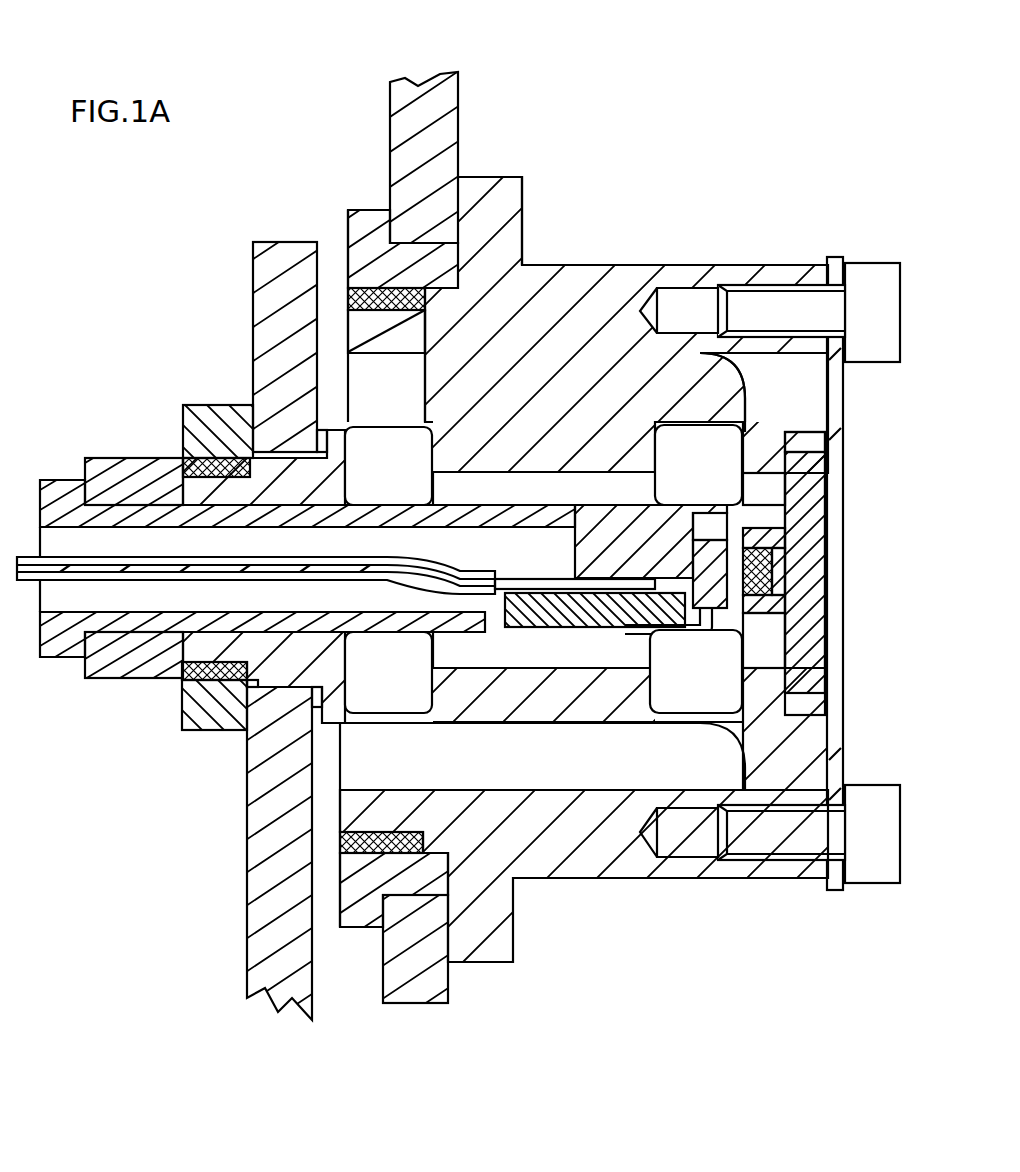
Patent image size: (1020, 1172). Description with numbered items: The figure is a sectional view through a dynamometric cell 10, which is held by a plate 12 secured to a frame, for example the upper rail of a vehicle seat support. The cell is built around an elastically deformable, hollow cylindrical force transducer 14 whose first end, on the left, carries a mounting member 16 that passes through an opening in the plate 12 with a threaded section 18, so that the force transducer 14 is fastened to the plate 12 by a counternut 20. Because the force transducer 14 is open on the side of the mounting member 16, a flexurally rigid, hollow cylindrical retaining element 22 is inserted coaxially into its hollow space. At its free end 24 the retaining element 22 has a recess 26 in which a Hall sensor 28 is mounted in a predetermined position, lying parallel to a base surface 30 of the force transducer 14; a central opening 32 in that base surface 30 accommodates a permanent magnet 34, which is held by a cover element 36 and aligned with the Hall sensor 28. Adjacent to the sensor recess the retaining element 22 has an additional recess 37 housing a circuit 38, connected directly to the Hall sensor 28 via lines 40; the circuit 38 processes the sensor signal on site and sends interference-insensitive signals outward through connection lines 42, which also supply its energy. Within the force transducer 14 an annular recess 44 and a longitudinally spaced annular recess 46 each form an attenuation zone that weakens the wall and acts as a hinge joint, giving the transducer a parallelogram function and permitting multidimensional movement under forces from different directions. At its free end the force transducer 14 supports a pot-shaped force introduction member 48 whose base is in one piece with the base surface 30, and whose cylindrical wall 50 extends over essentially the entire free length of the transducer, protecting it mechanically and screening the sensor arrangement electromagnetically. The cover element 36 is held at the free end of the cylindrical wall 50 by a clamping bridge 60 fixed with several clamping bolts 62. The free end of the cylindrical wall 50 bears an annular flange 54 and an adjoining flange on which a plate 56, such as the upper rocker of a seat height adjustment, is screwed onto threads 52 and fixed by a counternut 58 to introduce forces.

The dynamometric cell 10 is at (662, 135).
The plate secured to a frame 12 is at (262, 940).
The force transducer 14 is at (560, 700).
The mounting member 16 is at (165, 700).
The threaded section 18 is at (210, 462).
The counternut 20 is at (215, 708).
The retaining element 22 is at (62, 493).
The free end 24 is at (665, 495).
The recess 26 is at (725, 540).
The Hall sensor 28 is at (765, 598).
The base surface 30 is at (700, 400).
The central opening 32 is at (782, 490).
The permanent magnet 34 is at (775, 572).
The cover element 36 is at (790, 480).
The additional recess 37 is at (485, 690).
The circuit 38 is at (598, 605).
The lines 40 is at (668, 632).
The connection lines 42 is at (48, 557).
The annular recess 44 is at (370, 400).
The annular recess 46 is at (730, 447).
The force introduction member 48 is at (545, 890).
The cylindrical wall 50 is at (580, 270).
The threads 52 is at (300, 275).
The annular flange 54 is at (512, 182).
The plate 56 is at (408, 120).
The counternut 58 is at (365, 220).
The clamping bridge 60 is at (840, 395).
The clamping bolts 62 is at (870, 268).